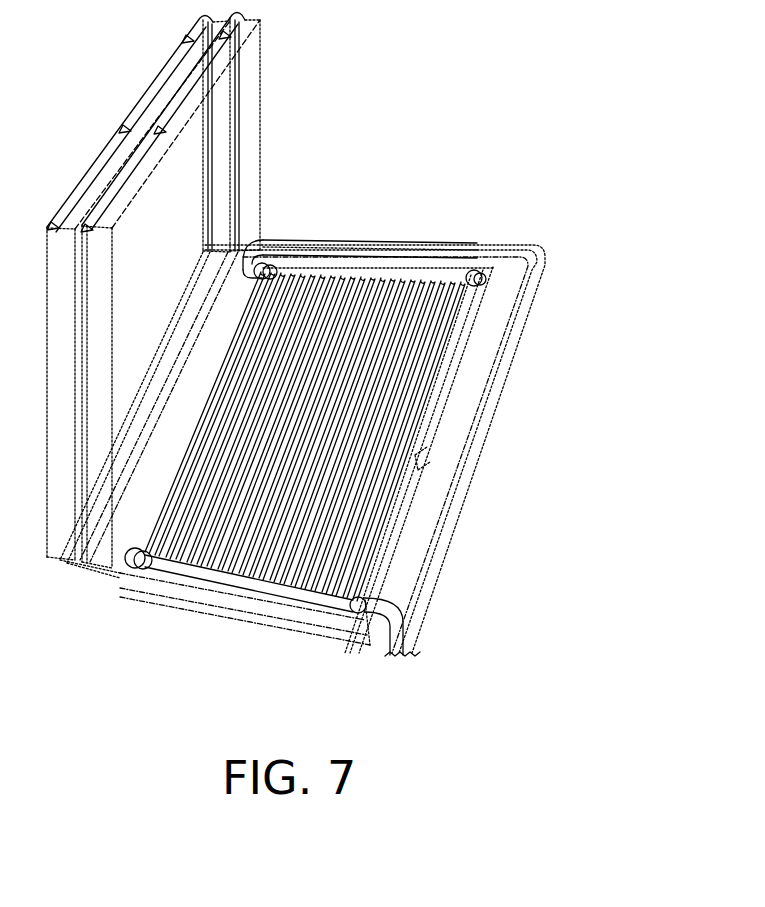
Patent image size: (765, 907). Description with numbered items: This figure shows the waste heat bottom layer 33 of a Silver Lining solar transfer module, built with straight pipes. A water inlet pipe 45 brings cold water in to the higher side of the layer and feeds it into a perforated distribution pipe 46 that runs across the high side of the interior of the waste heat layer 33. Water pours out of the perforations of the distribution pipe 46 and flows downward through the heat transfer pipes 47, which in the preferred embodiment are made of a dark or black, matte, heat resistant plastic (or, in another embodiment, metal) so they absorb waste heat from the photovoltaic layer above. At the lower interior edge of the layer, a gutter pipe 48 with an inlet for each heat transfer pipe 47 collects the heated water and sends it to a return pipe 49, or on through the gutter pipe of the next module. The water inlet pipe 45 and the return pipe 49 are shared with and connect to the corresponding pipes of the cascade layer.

The water inlet pipe 45 is at (415, 243).
The waste heat bottom layer 33 is at (458, 315).
The perforated distribution pipe 46 is at (312, 268).
The heat transfer pipes 47 is at (247, 500).
The gutter pipe 48 is at (168, 565).
The return pipe 49 is at (387, 656).